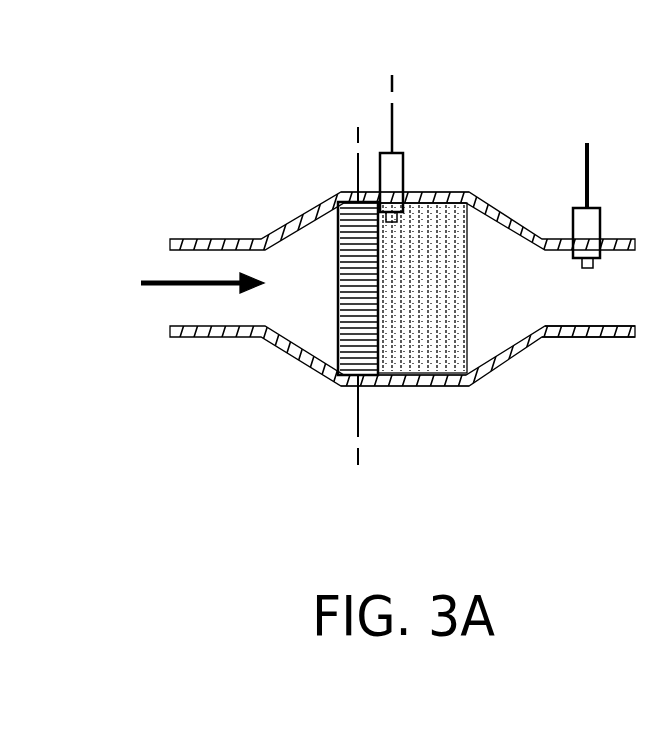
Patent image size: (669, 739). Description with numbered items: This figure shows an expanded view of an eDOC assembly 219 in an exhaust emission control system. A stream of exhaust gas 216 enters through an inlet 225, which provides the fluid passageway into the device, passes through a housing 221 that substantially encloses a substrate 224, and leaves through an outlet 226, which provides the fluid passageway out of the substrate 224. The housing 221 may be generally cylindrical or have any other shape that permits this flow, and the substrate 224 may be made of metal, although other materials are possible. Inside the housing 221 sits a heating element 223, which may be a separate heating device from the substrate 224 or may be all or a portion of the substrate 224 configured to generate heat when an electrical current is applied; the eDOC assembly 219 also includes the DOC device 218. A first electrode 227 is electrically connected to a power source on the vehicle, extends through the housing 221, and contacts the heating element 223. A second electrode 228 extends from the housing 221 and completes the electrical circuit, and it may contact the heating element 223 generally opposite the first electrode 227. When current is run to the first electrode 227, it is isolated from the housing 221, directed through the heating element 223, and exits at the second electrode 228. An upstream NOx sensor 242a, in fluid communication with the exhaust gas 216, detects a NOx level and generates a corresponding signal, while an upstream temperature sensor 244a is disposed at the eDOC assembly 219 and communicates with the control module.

The exhaust gas 216 is at (154, 276).
The DOC device 218 is at (409, 398).
The eDOC assembly 219 is at (509, 117).
The housing 221 is at (280, 355).
The heating element 223 is at (347, 360).
The substrate 224 is at (432, 343).
The inlet 225 is at (223, 248).
The outlet 226 is at (628, 340).
The first electrode 227 is at (357, 178).
The second electrode 228 is at (357, 425).
The upstream NOx sensor 242a is at (573, 218).
The upstream temperature sensor 244a is at (405, 188).